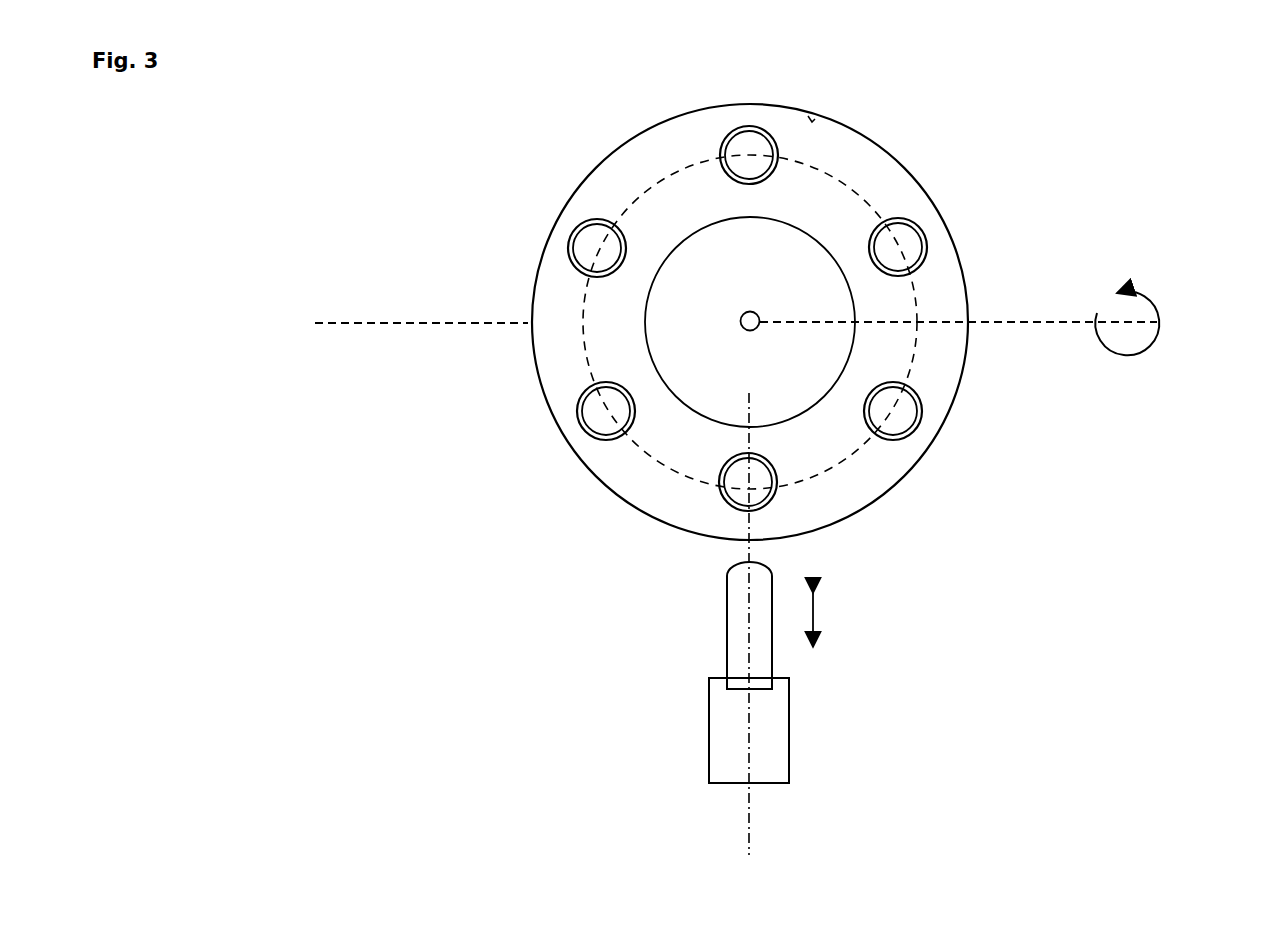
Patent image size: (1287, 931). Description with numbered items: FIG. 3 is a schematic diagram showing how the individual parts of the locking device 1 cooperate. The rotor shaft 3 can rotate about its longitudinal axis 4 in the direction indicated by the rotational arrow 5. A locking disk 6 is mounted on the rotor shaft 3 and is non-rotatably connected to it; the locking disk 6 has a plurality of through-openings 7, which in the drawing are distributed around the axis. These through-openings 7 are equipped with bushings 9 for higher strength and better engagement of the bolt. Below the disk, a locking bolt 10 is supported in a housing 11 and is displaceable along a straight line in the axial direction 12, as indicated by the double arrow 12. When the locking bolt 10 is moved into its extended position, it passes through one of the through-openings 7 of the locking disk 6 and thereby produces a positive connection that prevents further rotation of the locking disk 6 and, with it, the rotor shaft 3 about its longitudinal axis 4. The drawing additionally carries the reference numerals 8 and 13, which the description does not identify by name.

The locking device 1 is at (440, 124).
The rotor shaft 3 is at (765, 283).
The longitudinal axis 4 is at (1057, 326).
The rotational arrow 5 is at (1160, 332).
The locking disk 6 is at (882, 183).
The through-openings 7 is at (755, 146).
The bore rim 8 is at (745, 126).
The bushings 9 is at (657, 175).
The locking bolt 10 is at (740, 736).
The housing 11 is at (740, 621).
The axial direction 12 is at (834, 620).
The pin axis 13 is at (758, 824).